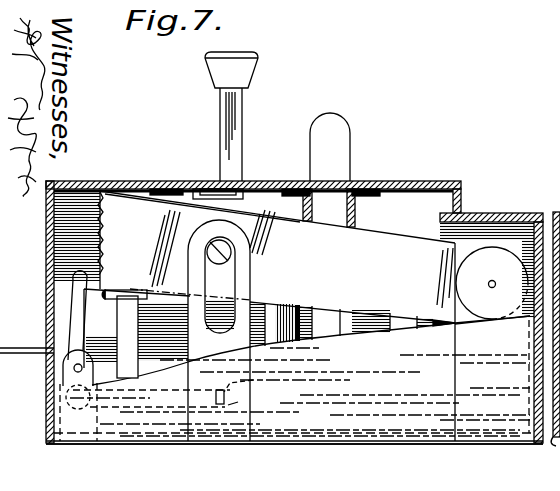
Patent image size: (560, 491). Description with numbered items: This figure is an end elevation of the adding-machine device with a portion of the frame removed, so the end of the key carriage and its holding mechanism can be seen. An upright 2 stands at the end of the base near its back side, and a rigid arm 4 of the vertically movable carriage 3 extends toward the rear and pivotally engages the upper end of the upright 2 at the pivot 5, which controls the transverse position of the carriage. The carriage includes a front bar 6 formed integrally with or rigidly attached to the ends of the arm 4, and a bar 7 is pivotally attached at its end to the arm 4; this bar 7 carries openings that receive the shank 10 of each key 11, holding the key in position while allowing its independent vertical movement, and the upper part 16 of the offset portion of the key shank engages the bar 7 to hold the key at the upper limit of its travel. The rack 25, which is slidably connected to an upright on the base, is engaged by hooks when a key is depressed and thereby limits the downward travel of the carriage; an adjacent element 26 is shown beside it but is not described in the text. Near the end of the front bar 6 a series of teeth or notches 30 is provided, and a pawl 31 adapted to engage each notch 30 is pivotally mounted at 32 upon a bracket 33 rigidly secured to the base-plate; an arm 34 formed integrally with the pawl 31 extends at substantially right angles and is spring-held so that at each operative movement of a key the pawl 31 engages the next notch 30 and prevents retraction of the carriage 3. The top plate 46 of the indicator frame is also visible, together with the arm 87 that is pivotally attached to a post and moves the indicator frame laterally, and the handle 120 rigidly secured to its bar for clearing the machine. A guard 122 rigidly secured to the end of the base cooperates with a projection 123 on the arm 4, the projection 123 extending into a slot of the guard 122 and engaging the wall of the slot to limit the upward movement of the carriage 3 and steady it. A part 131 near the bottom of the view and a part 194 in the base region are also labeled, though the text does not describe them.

The uprights 2 is at (484, 320).
The carriage 3 is at (152, 208).
The arm 4 is at (320, 282).
The pivot 5 is at (489, 283).
The front bar 6 is at (88, 186).
The bar 7 is at (228, 208).
The key shank 10 is at (228, 112).
The key 11 is at (258, 66).
The offset part of key shank 16 is at (195, 182).
The rack 25 is at (126, 292).
The post 26 is at (132, 308).
The teeth or notches 30 is at (100, 220).
The pawl 31 is at (80, 320).
The pivot 32 is at (74, 369).
The bracket 33 is at (52, 346).
The arm 34 is at (178, 416).
The top plate 46 is at (367, 198).
The arm 87 is at (548, 342).
The handle 120 is at (344, 127).
The guard 122 is at (190, 323).
The projection 123 is at (222, 250).
The bottom plate 131 is at (443, 487).
The clamp 194 is at (288, 388).